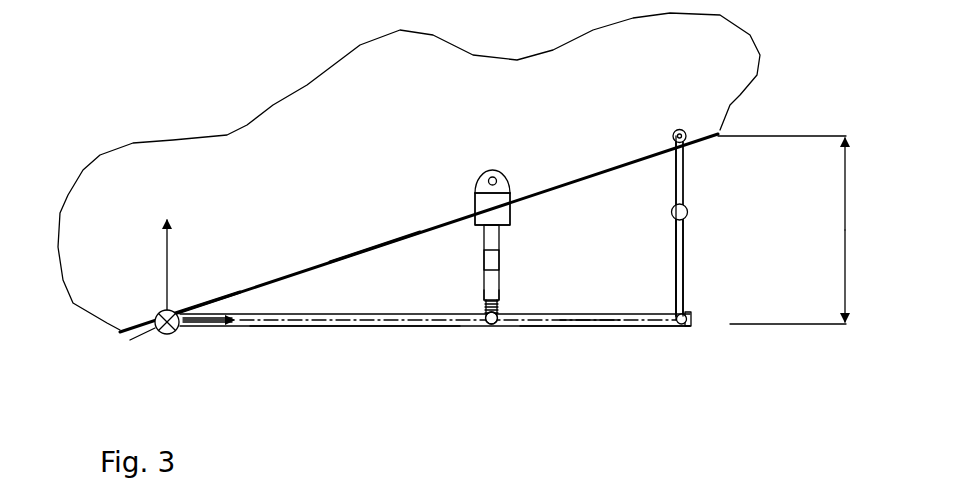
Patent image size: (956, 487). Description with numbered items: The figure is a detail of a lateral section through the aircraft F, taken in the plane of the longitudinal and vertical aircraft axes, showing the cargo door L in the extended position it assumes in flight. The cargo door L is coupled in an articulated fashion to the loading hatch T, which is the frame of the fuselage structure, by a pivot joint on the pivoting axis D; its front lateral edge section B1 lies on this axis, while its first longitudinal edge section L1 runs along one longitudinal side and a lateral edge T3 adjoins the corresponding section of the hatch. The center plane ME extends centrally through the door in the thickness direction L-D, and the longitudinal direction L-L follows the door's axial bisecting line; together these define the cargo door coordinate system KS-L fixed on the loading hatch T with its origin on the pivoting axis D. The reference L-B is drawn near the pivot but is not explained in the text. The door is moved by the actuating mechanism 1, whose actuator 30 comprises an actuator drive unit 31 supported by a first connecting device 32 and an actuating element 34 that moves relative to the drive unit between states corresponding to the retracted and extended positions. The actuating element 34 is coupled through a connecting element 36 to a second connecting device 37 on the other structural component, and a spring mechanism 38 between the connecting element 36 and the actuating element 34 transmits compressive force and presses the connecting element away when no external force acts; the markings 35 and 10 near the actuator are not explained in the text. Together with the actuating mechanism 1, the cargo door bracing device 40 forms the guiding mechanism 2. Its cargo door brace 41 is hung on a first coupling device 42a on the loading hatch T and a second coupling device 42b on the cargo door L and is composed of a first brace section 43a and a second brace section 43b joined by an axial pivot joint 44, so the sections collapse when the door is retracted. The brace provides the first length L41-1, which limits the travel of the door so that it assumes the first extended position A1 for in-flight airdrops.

The aircraft F is at (305, 86).
The loading hatch T is at (292, 260).
The lateral edge T3 is at (377, 245).
The cargo door coordinate system KS-L is at (198, 288).
The pivoting axis D is at (167, 336).
The thickness direction L-D is at (142, 265).
The lever bearing L-B is at (153, 331).
The cargo door L is at (340, 338).
The first longitudinal edge section L1 is at (375, 325).
The longitudinal direction L-L is at (197, 328).
The center plane ME is at (587, 323).
The front lateral edge section B1 is at (355, 303).
The first extended position A1 is at (605, 303).
The actuating mechanism 1 is at (420, 158).
The actuator 30 is at (474, 246).
The actuator drive unit 31 is at (492, 214).
The first connecting device 32 is at (492, 175).
The actuating element 34 is at (487, 276).
The connecting element 36 is at (487, 300).
The spring mechanism 38 is at (479, 309).
The second connecting device 37 is at (496, 325).
The contact element 35 is at (513, 304).
The plunger section 10 is at (604, 246).
The cargo door bracing device 40 is at (755, 190).
The cargo door brace 41 is at (719, 223).
The first coupling device 42a is at (681, 129).
The second coupling device 42b is at (690, 324).
The first brace section 43a is at (683, 174).
The second brace section 43b is at (684, 288).
The axial pivot joint 44 is at (531, 146).
The guiding mechanism 2 is at (766, 119).
The first length L41-1 is at (845, 278).